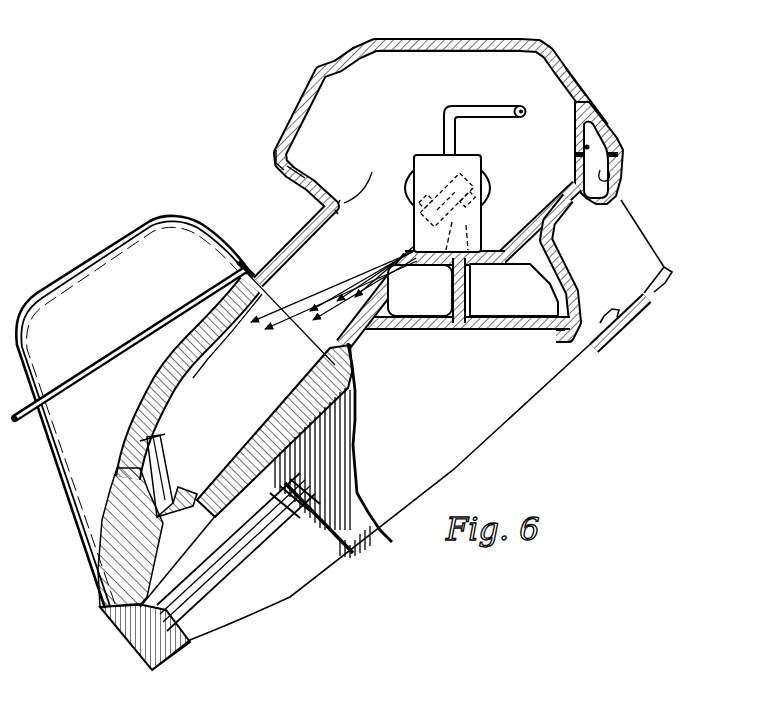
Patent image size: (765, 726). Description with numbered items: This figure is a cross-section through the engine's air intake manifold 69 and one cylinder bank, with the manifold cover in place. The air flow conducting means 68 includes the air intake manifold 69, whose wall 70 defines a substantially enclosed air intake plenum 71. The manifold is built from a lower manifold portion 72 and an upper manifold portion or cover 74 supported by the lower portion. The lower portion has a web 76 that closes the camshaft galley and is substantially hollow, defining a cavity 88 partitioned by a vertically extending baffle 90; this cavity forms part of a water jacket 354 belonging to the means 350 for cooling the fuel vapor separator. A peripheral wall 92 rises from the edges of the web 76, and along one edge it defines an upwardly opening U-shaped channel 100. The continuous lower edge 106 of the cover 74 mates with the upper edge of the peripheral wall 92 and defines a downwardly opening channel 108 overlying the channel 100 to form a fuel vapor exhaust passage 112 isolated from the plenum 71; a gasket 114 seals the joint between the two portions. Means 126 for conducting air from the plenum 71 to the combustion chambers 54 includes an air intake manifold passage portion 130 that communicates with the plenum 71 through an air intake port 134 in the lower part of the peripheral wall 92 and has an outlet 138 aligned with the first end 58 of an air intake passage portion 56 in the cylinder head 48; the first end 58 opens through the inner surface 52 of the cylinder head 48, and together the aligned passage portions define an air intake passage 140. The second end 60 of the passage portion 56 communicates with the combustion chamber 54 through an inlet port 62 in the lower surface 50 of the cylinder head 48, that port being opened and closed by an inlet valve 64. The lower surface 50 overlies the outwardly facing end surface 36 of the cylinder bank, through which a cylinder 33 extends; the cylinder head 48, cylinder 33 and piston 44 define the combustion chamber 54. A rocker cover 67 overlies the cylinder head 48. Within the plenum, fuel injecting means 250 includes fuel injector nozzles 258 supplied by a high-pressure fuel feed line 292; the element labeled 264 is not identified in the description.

The air flow conducting means 68 is at (582, 78).
The air intake manifold 69 is at (335, 63).
The wall 70 is at (453, 43).
The air intake plenum 71 is at (388, 101).
The upper manifold portion or cover 74 is at (583, 103).
The downwardly opening channel 108 is at (610, 140).
The gasket 114 is at (622, 154).
The fuel vapor exhaust passage 112 is at (584, 147).
The U-shaped channel 100 is at (618, 181).
The high-pressure fuel feed line 292 is at (490, 104).
The fuel injector nozzles 258 is at (458, 190).
The valve housing 264 is at (430, 153).
The peripheral wall 92 is at (318, 183).
The air intake port 134 is at (371, 177).
The lower edge 106 is at (279, 163).
The means for conducting air from the plenum to the combustion chambers 126 is at (322, 204).
The air intake manifold passage portions 130 is at (392, 211).
The air intake passages 140 is at (346, 298).
The outlet 138 is at (372, 252).
The web 76 is at (487, 252).
The lower manifold portion 72 is at (545, 230).
The cavity 88 is at (530, 283).
The baffle 90 is at (460, 302).
The water jacket 354 is at (450, 318).
The fuel vapor separator cooling means 350 is at (523, 335).
The fuel injecting means 250 is at (628, 256).
The rocker cover 67 is at (126, 240).
The inner surfaces 52 is at (247, 270).
The first end 58 is at (330, 352).
The air intake passage portions 56 is at (247, 406).
The end surfaces 36 is at (357, 380).
The inlet valves 64 is at (140, 442).
The inlet port 62 is at (187, 464).
The second end 60 is at (190, 486).
The cylinder heads 48 is at (115, 587).
The lower surfaces 50 is at (112, 622).
The combustion chambers 54 is at (227, 550).
The pistons 44 is at (289, 567).
The cylinders 33 is at (373, 514).